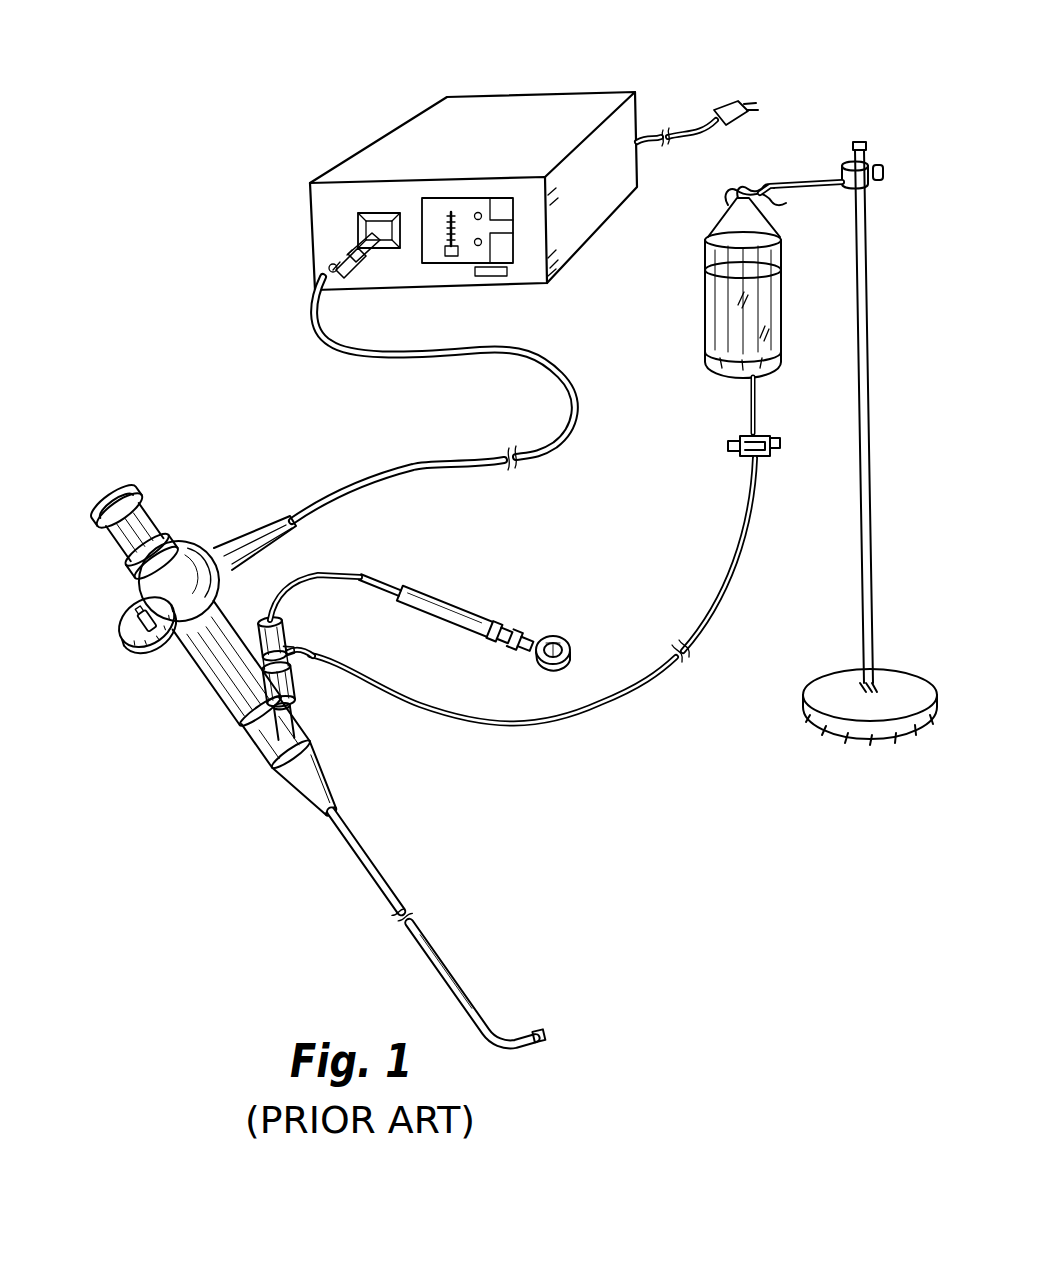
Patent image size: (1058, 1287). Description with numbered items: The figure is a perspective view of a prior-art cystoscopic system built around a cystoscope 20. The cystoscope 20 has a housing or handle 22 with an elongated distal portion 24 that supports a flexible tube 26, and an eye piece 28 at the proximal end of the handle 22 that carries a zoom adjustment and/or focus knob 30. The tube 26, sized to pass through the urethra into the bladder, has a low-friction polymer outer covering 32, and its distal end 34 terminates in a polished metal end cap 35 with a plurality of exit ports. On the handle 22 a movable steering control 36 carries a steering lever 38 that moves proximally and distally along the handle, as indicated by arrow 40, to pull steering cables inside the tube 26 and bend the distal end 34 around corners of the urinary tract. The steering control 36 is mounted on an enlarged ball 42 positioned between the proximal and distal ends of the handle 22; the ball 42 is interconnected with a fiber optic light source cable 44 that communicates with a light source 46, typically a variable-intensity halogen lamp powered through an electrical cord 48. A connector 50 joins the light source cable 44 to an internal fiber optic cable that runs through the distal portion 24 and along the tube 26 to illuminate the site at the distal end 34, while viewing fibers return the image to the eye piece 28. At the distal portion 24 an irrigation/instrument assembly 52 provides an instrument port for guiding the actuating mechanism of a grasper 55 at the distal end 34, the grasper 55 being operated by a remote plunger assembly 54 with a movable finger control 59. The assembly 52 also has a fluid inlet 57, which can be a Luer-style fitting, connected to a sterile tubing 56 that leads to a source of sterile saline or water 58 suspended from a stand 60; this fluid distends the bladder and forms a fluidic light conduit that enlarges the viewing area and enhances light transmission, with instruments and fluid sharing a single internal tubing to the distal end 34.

The cystoscope 20 is at (185, 510).
The handle 22 is at (211, 700).
The elongated distal portion 24 is at (252, 746).
The flexible tube 26 is at (491, 934).
The eye piece 28 is at (112, 556).
The focus knob 30 is at (165, 512).
The outer covering 32 is at (398, 893).
The distal end 34 is at (549, 1046).
The end cap 35 is at (541, 1028).
The steering control 36 is at (133, 659).
The steering lever 38 is at (112, 626).
The arrow 40 is at (162, 652).
The enlarged ball 42 is at (185, 558).
The light source cable 44 is at (318, 499).
The light source 46 is at (430, 132).
The electrical cord 48 is at (700, 128).
The connector 50 is at (276, 518).
The irrigation/instrument assembly 52 is at (307, 679).
The remote plunger assembly 54 is at (454, 600).
The grasper 55 is at (552, 1033).
The sterile tubing 56 is at (430, 722).
The fluid inlet 57 is at (292, 652).
The source of sterile saline or water 58 is at (714, 374).
The finger control 59 is at (563, 636).
The stand 60 is at (859, 609).